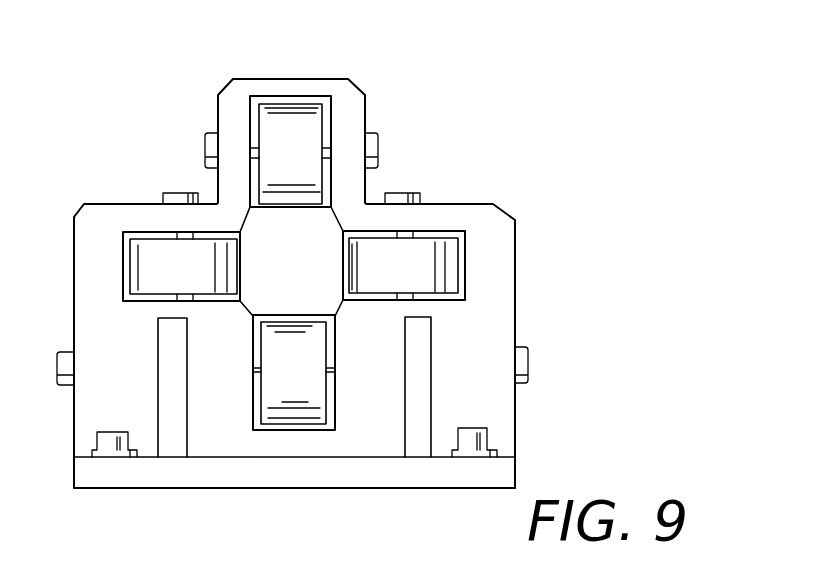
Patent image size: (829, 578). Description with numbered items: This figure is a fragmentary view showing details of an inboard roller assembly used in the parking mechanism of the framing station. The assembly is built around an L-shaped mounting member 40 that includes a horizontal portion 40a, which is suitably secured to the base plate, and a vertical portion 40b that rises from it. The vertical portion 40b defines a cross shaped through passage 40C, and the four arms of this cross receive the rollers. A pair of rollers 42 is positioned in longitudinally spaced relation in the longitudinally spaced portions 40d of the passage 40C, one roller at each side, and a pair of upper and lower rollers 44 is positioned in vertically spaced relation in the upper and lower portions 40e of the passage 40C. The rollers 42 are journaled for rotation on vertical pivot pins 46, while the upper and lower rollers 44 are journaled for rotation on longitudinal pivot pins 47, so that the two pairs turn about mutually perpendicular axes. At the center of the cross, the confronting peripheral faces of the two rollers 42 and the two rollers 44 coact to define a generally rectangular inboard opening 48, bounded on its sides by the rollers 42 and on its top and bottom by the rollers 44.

The mounting member 40 is at (212, 108).
The horizontal portion 40a is at (518, 464).
The vertical portion 40b is at (515, 270).
The cross shaped through passage 40C is at (312, 96).
The longitudinally spaced portions 40d is at (136, 264).
The upper and lower portions 40e is at (293, 100).
The rollers 42 is at (195, 278).
The upper and lower rollers 44 is at (303, 173).
The vertical pivot pins 46 is at (173, 193).
The longitudinal pivot pins 47 is at (378, 138).
The inboard opening 48 is at (305, 278).